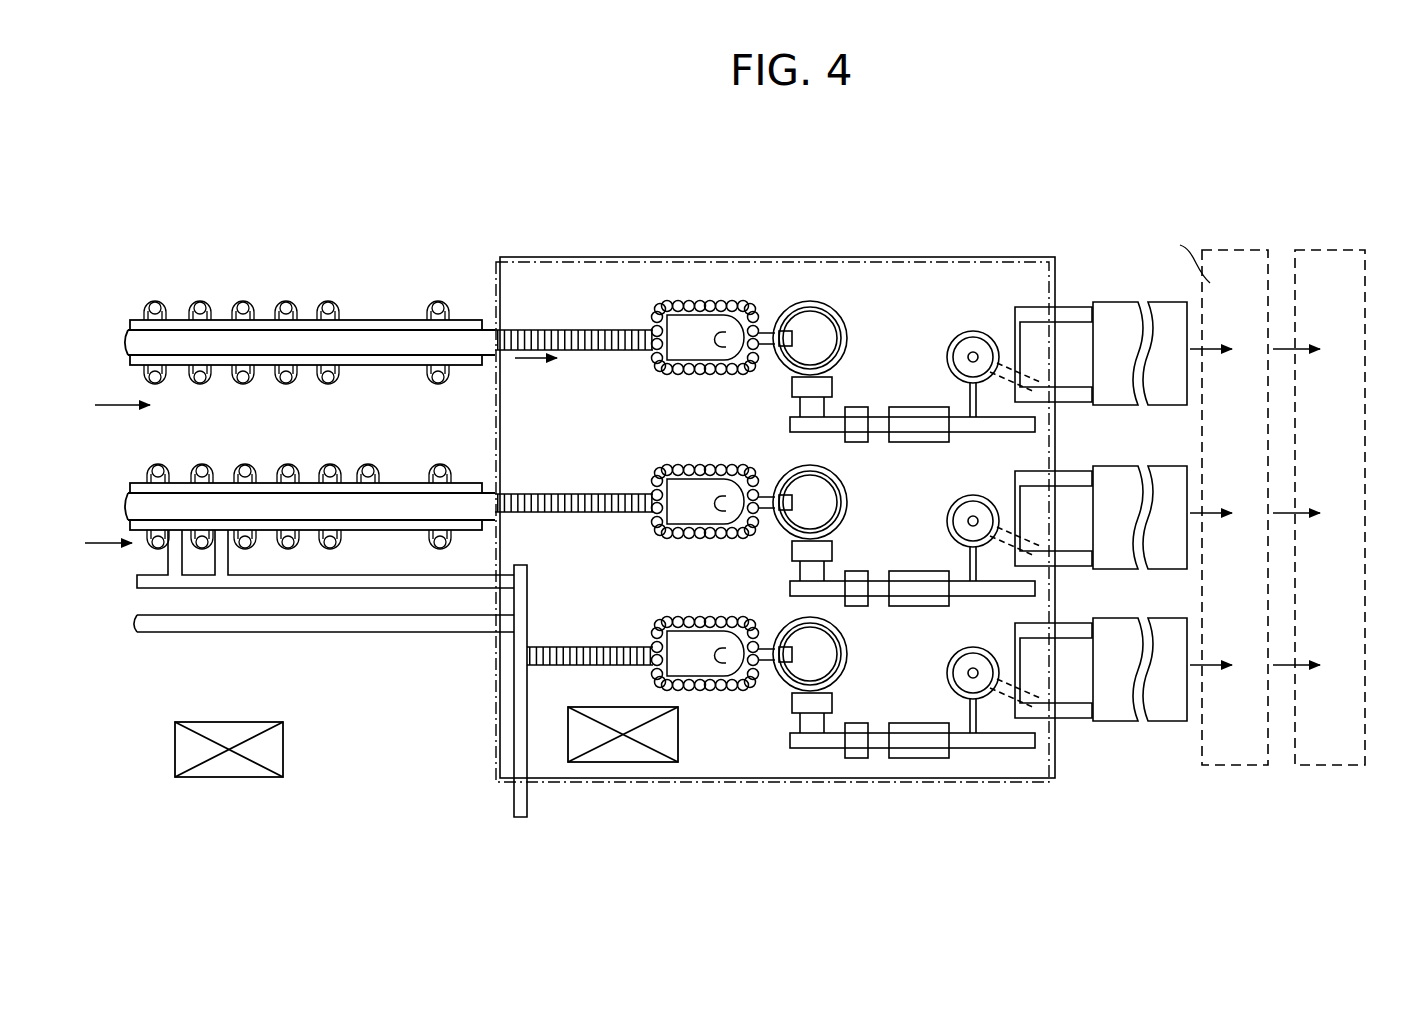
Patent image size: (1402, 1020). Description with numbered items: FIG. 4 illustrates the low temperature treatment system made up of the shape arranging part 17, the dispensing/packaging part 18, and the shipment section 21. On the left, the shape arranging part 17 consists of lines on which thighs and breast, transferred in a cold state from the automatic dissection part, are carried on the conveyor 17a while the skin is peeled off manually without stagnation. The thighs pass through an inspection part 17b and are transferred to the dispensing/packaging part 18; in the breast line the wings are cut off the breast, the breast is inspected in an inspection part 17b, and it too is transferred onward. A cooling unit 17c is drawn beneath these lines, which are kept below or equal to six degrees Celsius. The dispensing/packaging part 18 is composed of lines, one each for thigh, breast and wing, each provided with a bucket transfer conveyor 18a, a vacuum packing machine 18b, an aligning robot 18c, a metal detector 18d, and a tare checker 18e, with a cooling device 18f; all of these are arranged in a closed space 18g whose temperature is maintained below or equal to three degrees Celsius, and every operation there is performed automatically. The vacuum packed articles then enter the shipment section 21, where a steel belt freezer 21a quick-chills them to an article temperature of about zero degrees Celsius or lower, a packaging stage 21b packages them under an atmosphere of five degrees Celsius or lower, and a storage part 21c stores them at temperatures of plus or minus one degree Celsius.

The shape arranging part 17 is at (197, 290).
The conveyor 17a is at (213, 347).
The inspection part 17b is at (437, 305).
The cooling device 17c is at (284, 748).
The dispensing/packaging part 18 is at (758, 252).
The bucket transfer conveyor 18a is at (546, 330).
The vacuum packing machine 18b is at (847, 301).
The aligning robot 18c is at (952, 340).
The metal detector 18d is at (857, 762).
The tare checker 18e is at (937, 762).
The cooling device 18f is at (585, 765).
The closed space 18g is at (622, 257).
The shipment section 21 is at (1387, 168).
The freezer 21a is at (1112, 268).
The tempering chamber 21b is at (1223, 247).
The storage part 21c is at (1316, 247).